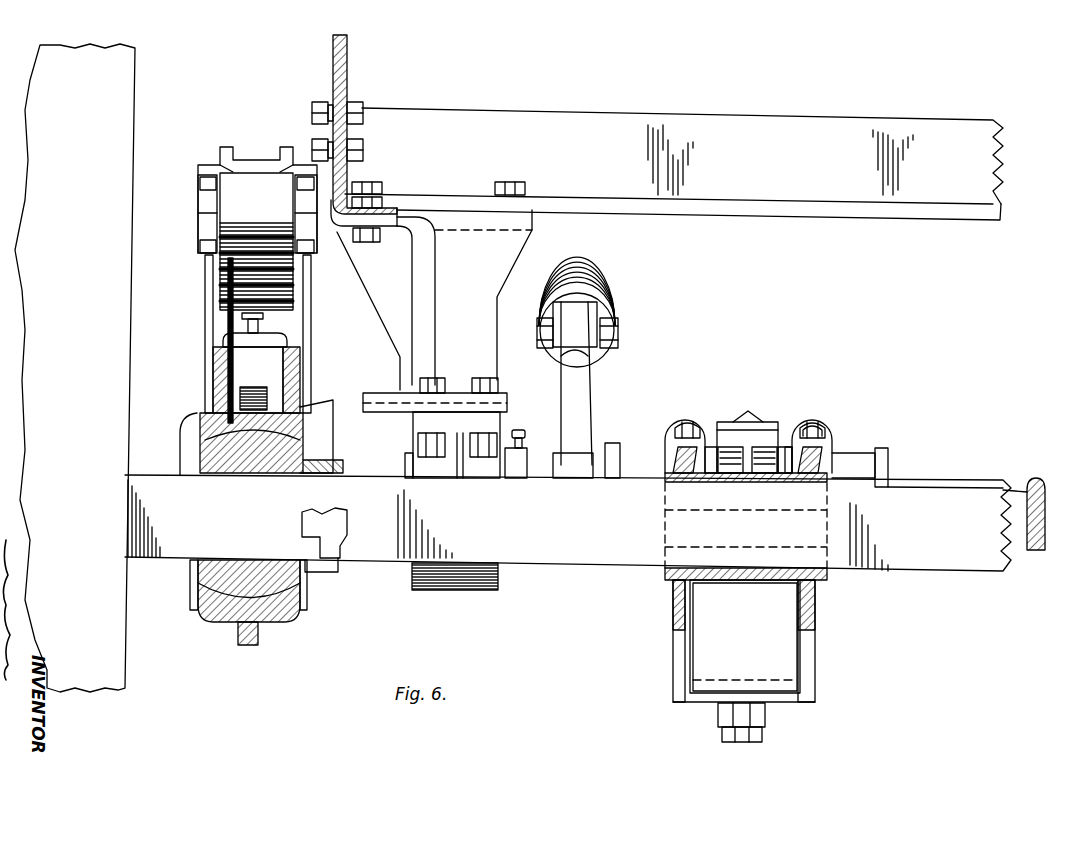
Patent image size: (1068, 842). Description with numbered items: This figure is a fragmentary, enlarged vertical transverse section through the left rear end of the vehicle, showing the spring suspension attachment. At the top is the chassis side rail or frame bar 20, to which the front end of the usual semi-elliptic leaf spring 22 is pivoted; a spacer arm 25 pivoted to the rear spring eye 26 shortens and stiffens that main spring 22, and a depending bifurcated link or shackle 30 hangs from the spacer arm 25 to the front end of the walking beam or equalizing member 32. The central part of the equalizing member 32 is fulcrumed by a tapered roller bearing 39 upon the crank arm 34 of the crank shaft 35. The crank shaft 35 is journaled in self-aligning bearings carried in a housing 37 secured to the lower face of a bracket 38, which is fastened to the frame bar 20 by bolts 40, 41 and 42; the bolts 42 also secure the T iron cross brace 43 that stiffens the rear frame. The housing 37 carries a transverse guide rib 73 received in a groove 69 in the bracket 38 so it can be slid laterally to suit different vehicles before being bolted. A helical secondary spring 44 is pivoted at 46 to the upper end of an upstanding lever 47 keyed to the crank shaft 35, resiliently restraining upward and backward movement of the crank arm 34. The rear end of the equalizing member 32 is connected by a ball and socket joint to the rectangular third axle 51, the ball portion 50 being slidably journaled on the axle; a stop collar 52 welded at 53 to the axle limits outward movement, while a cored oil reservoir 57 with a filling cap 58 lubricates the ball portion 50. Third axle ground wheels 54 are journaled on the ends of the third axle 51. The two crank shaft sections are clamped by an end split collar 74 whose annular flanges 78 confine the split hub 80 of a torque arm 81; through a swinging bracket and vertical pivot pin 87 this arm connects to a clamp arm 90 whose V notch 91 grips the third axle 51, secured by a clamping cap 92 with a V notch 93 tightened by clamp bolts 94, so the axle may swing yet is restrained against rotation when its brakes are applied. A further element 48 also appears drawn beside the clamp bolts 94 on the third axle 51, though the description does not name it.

The side rail or frame bar 20 is at (337, 50).
The semi-elliptic leaf spring 22 is at (175, 282).
The spacer arm 25 is at (288, 147).
The rear spring eye 26 is at (198, 214).
The link or shackle 30 is at (242, 316).
The equalizing member 32 is at (212, 371).
The crank arm 34 is at (337, 468).
The crank shaft 35 is at (530, 462).
The bearing housing 37 is at (460, 592).
The bracket 38 is at (517, 247).
The tapered roller bearing 39 is at (318, 403).
The bolt 40 is at (312, 147).
The bolt 41 is at (366, 243).
The bolt 42 is at (366, 182).
The T iron cross brace 43 is at (953, 118).
The helical secondary spring 44 is at (586, 270).
The pivot 46 is at (620, 334).
The upstanding lever 47 is at (592, 385).
The bolt 48 is at (708, 447).
The ball portion 50 is at (197, 574).
The third axle 51 is at (925, 575).
The stop collar 52 is at (302, 525).
The weld 53 is at (343, 472).
The third axle ground wheel 54 is at (133, 62).
The cored oil reservoir 57 is at (238, 337).
The filling cap 58 is at (248, 326).
The groove 69 is at (387, 405).
The guide rib 73 is at (378, 393).
The end split collar 74 is at (628, 453).
The annular flange 78 is at (787, 447).
The split hub 80 is at (728, 422).
The torque arm 81 is at (767, 437).
The vertical pivot pin 87 is at (739, 744).
The clamp arm 90 is at (803, 658).
The V notch 91 is at (767, 573).
The clamping cap 92 is at (828, 440).
The V notch 93 is at (758, 483).
The clamp bolt 94 is at (805, 422).